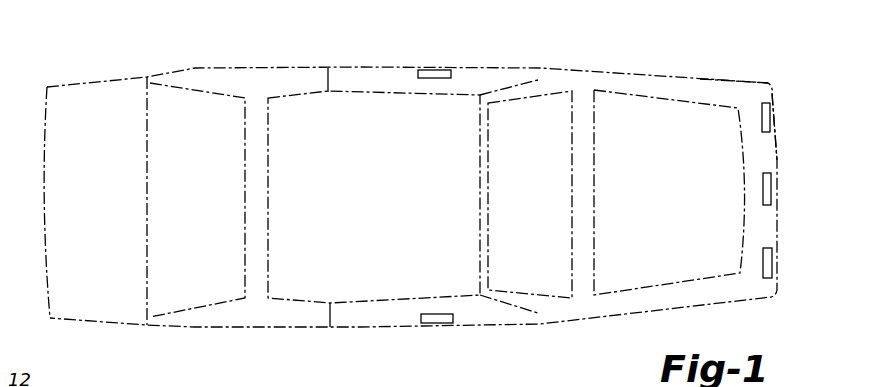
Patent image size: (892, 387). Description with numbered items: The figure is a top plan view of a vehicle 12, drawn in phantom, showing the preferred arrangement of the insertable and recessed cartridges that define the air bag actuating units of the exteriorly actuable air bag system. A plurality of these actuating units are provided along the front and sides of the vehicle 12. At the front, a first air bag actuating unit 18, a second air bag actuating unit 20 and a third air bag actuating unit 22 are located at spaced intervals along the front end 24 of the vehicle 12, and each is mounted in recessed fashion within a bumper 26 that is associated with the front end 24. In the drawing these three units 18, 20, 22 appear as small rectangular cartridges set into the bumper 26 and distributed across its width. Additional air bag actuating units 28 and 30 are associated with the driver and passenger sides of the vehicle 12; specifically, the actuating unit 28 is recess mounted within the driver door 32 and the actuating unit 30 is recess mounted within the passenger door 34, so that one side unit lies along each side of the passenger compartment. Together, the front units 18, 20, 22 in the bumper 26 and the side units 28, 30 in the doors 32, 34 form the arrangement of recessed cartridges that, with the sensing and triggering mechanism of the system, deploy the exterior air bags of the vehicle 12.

The vehicle 12 is at (192, 62).
The first air bag actuating unit 18 is at (770, 121).
The second air bag actuating unit 20 is at (771, 193).
The third air bag actuating unit 22 is at (772, 265).
The front end 24 is at (745, 88).
The bumper 26 is at (777, 103).
The air bag actuating unit 28 is at (428, 72).
The air bag actuating unit 30 is at (436, 325).
The driver door 32 is at (275, 68).
The passenger door 34 is at (375, 325).